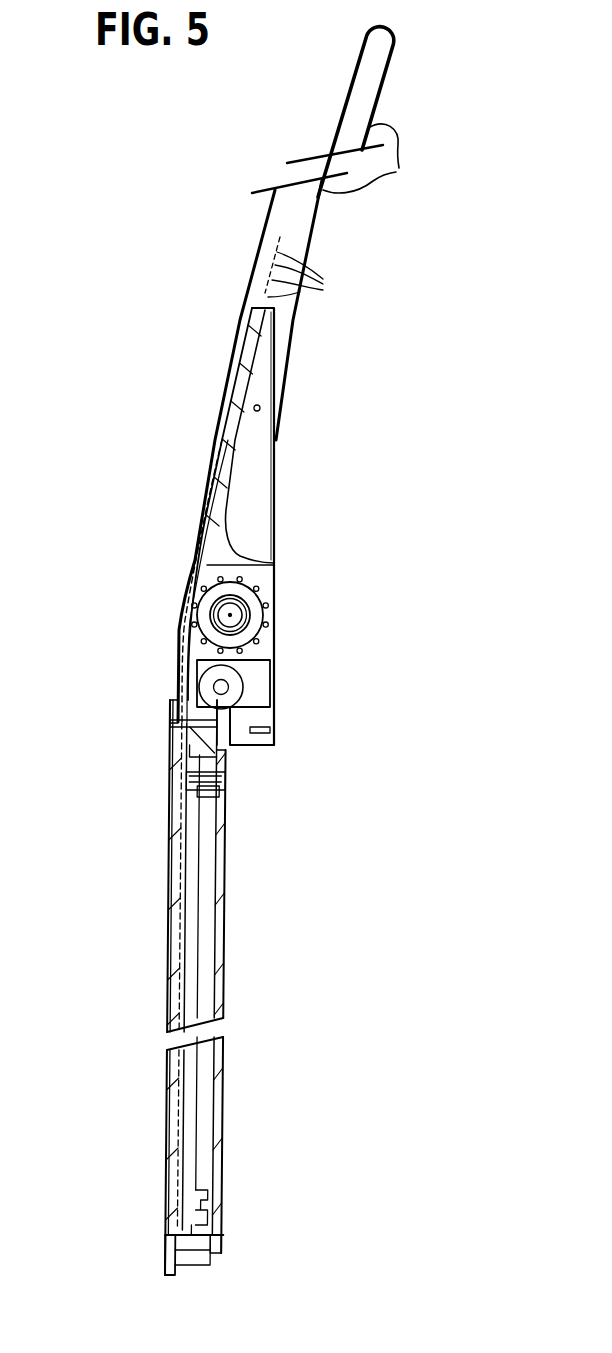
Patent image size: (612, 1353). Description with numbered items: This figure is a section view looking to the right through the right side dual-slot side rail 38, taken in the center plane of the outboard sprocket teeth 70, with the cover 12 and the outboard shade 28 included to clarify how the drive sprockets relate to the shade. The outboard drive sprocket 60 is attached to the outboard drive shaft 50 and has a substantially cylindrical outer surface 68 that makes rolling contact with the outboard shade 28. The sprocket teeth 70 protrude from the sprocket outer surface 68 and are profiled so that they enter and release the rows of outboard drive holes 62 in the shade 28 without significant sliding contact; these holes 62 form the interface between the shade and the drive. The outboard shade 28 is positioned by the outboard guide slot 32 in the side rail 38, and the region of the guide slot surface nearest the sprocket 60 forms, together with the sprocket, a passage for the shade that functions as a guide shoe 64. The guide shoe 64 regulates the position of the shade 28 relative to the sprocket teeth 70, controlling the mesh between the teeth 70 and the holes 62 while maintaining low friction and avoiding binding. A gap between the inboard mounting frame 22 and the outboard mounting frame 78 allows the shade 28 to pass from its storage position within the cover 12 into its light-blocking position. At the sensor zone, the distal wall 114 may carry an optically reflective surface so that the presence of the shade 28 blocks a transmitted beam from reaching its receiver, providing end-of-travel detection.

The cover 12 is at (335, 112).
The outboard shade 28 is at (275, 256).
The outboard guide slot 32 is at (256, 305).
The outboard drive holes 62 is at (309, 277).
The guide shoe 64 is at (188, 612).
The outboard sprocket teeth 70 is at (248, 566).
The sprocket outer surface 68 is at (268, 613).
The outboard drive shaft 50 is at (232, 617).
The outboard drive sprocket 60 is at (243, 638).
The right side dual-slot side rail 38 is at (245, 748).
The inboard mounting frame 22 is at (227, 830).
The outboard mounting frame 78 is at (170, 830).
The distal wall 114 is at (170, 888).